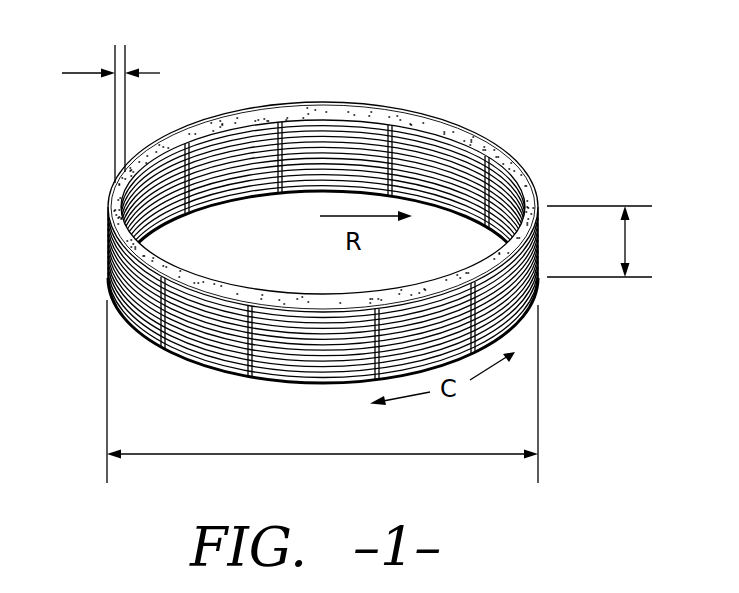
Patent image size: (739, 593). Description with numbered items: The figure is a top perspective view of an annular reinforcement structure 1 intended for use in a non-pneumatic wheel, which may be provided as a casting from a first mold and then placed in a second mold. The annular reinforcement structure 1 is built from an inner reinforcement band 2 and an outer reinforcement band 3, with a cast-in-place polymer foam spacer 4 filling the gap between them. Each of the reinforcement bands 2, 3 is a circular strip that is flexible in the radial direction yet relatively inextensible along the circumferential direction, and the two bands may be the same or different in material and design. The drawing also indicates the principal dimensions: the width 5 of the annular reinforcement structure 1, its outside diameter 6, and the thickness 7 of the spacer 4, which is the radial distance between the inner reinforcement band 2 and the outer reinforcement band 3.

The annular reinforcement structure 1 is at (357, 203).
The inner reinforcement band 2 is at (224, 290).
The outer reinforcement band 3 is at (369, 103).
The cast-in-place polymer foam spacer 4 is at (232, 112).
The width 5 is at (626, 242).
The outside diameter 6 is at (307, 455).
The thickness 7 is at (75, 72).